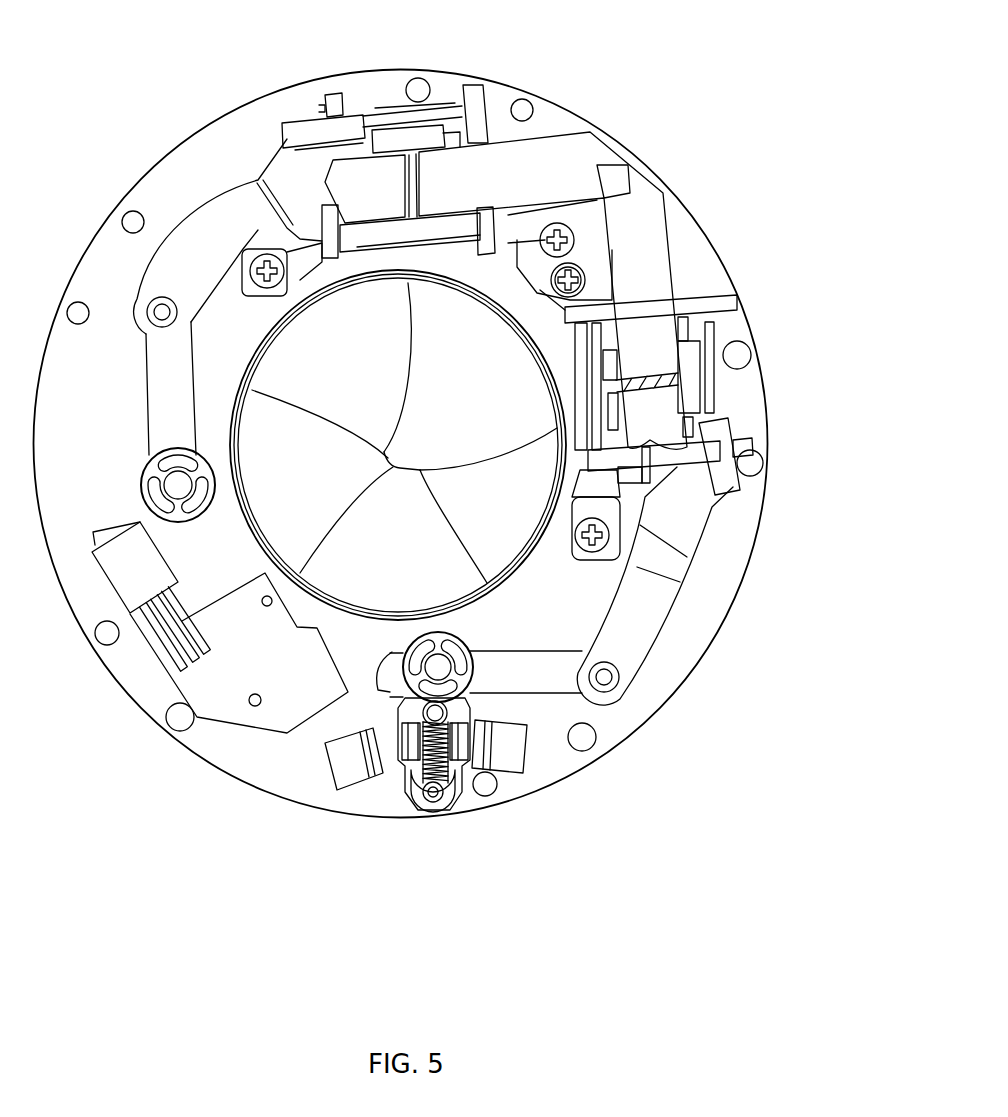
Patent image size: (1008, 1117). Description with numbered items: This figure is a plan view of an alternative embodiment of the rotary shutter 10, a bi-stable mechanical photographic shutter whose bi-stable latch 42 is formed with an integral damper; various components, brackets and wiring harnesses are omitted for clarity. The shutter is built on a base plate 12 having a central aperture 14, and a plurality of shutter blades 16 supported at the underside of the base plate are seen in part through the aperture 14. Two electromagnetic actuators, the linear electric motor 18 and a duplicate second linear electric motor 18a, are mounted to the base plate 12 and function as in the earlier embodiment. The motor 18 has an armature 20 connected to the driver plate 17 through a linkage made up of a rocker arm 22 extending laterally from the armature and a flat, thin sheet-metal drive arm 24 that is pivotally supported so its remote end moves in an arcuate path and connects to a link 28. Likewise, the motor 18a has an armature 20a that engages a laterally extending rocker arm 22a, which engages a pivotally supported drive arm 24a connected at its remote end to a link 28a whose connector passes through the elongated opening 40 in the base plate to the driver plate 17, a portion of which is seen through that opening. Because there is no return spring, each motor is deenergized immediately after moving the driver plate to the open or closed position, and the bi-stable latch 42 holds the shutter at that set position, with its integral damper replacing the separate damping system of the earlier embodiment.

The rotary shutter 10 is at (728, 69).
The base plate 12 is at (650, 168).
The central aperture 14 is at (267, 337).
The shutter blades 16 is at (398, 579).
The driver plate 17 is at (388, 677).
The linear electric motor 18 is at (417, 135).
The second linear electric motor 18a is at (690, 352).
The armature 20 is at (387, 117).
The armature 20a is at (710, 338).
The rocker arm 22 is at (308, 123).
The rocker arm 22a is at (727, 488).
The drive arm 24 is at (208, 228).
The drive arm 24a is at (613, 620).
The link 28 is at (147, 383).
The link 28a is at (510, 630).
The elongated opening 40 is at (387, 652).
The bi-stable latch 42 is at (378, 797).